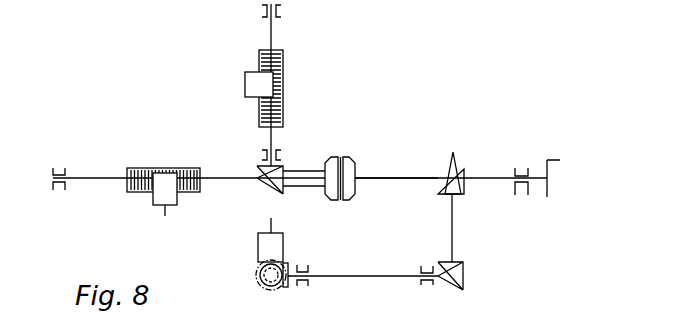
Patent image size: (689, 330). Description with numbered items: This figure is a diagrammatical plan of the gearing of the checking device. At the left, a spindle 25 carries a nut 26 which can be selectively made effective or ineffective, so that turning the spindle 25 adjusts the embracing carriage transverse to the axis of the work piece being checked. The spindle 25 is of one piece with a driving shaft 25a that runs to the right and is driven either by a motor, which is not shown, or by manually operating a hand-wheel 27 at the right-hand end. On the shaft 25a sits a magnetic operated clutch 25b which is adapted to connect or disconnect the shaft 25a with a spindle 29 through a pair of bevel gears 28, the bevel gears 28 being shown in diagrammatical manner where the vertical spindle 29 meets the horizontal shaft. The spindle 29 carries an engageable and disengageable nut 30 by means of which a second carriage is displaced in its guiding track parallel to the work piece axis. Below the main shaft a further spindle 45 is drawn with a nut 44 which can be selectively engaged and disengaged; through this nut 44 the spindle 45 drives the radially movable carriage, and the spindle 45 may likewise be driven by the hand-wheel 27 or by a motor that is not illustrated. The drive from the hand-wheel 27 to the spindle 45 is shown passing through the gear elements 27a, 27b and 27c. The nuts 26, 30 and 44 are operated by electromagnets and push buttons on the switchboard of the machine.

The spindle 25 is at (147, 167).
The nut 26 is at (167, 196).
The shaft 25a is at (407, 177).
The magnetic operated clutch 25b is at (347, 165).
The hand-wheel 27 is at (548, 172).
The bevel gear 27a is at (463, 195).
The bevel gear 27b is at (455, 283).
The worm 27c is at (288, 284).
The pair of bevel gears 28 is at (280, 190).
The spindle 29 is at (283, 110).
The nut 30 is at (255, 80).
The nut 44 is at (258, 243).
The spindle 45 is at (263, 281).